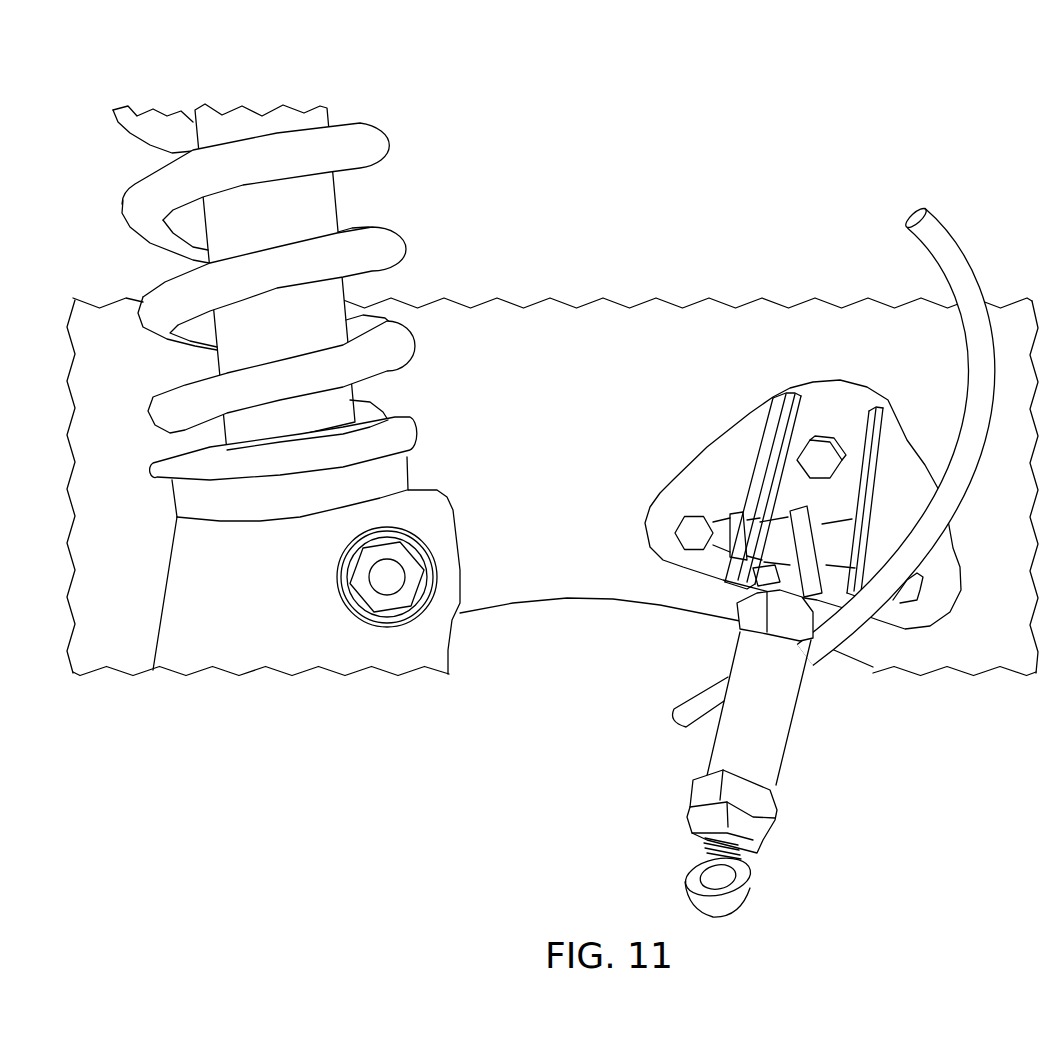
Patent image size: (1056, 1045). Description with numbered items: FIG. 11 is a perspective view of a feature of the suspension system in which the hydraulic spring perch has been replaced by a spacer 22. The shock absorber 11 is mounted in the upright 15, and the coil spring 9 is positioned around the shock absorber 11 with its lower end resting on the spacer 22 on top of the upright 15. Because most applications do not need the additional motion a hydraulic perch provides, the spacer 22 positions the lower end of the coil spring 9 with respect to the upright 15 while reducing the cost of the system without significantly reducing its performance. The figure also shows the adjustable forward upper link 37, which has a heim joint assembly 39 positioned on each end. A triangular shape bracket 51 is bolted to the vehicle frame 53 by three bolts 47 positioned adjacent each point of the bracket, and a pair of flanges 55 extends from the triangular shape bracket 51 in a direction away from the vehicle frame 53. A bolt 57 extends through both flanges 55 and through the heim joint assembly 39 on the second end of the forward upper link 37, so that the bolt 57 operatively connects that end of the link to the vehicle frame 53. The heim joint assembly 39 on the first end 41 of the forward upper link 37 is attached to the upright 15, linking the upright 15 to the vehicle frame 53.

The coil spring 9 is at (382, 145).
The shock absorber 11 is at (314, 202).
The spacer 22 is at (170, 500).
The upright 15 is at (182, 625).
The vehicle frame 53 is at (700, 333).
The triangular shape bracket 51 is at (727, 457).
The flanges 55 is at (780, 417).
The bolt 47 is at (826, 458).
The heim joint assembly 39 is at (803, 527).
The bolt 57 is at (677, 560).
The adjustable forward upper link 37 is at (780, 712).
The first end 41 is at (767, 818).